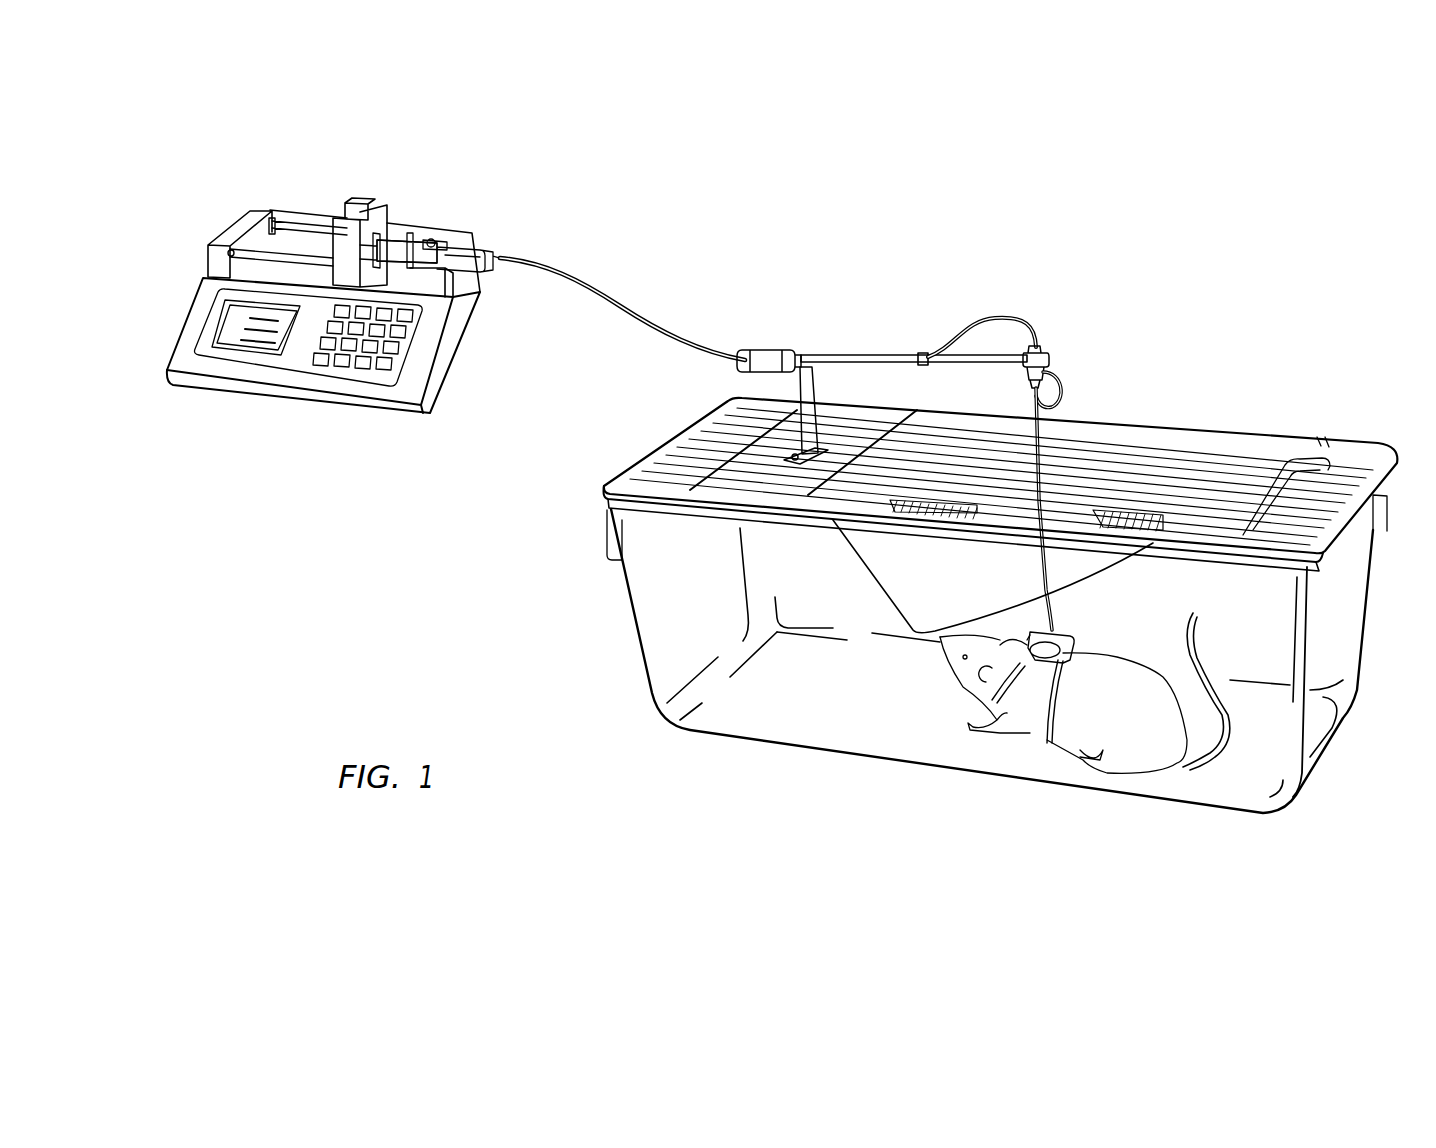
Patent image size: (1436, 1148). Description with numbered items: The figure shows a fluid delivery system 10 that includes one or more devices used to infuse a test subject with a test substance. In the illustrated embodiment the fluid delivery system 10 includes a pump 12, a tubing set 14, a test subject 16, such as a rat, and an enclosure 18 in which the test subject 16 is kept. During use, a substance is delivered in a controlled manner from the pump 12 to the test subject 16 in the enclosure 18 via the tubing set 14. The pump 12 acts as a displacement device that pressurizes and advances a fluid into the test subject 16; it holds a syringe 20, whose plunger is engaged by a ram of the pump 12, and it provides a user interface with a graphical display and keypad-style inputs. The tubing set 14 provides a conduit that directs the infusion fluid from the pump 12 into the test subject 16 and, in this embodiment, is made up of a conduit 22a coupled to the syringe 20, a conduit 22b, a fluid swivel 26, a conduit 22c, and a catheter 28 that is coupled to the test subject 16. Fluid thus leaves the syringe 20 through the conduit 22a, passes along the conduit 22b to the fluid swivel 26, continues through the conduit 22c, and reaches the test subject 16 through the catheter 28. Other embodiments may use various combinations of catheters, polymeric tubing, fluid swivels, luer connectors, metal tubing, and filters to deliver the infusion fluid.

The fluid delivery system 10 is at (1147, 229).
The pump 12 is at (270, 395).
The tubing set 14 is at (843, 309).
The test subject 16 is at (1115, 732).
The enclosure 18 is at (640, 650).
The syringe 20 is at (487, 244).
The conduit 22a is at (593, 284).
The conduit 22b is at (967, 330).
The conduit 22c is at (1046, 478).
The fluid swivel 26 is at (1044, 347).
The catheter 28 is at (1072, 638).